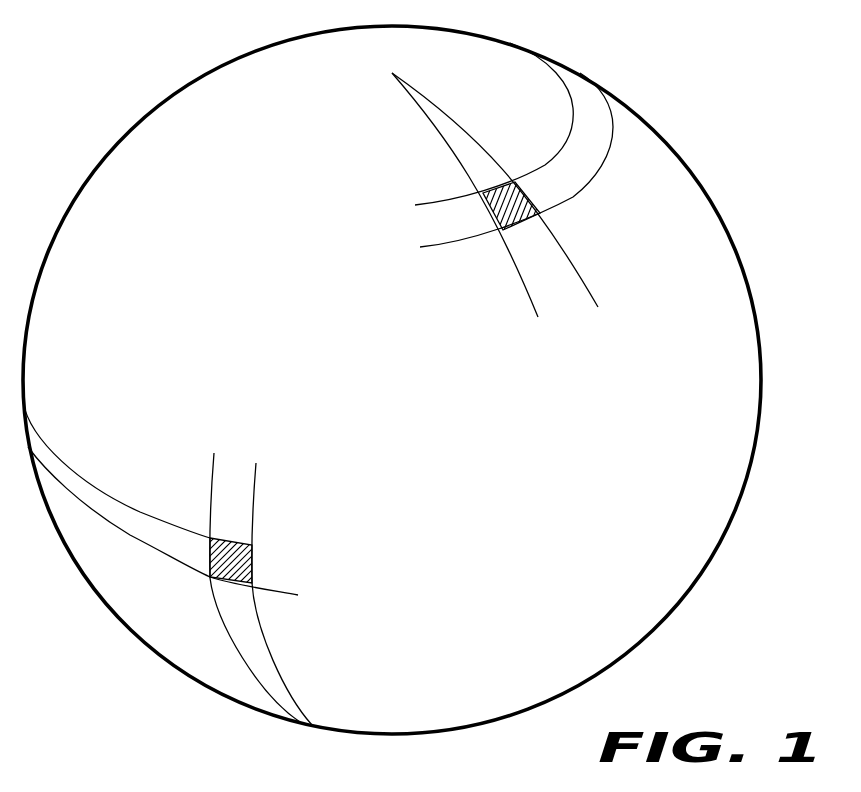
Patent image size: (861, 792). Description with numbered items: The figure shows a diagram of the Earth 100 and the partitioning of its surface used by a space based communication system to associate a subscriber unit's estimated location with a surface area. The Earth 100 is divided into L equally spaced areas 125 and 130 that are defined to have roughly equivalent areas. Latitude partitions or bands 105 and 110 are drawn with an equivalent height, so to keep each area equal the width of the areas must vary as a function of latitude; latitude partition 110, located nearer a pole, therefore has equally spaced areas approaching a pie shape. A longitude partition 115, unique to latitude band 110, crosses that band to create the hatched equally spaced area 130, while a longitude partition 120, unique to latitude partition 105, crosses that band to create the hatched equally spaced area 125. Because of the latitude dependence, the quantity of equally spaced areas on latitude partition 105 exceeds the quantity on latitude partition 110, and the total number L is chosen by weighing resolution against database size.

The Earth 100 is at (728, 230).
The latitude partition 105 is at (187, 530).
The latitude band 110 is at (452, 240).
The longitude partition 115 is at (533, 298).
The longitude partition 120 is at (257, 497).
The equally spaced area 125 is at (255, 568).
The equally spaced area 130 is at (532, 197).